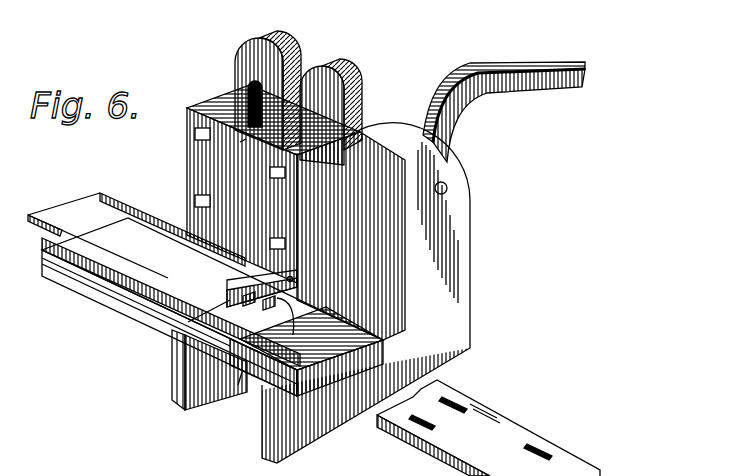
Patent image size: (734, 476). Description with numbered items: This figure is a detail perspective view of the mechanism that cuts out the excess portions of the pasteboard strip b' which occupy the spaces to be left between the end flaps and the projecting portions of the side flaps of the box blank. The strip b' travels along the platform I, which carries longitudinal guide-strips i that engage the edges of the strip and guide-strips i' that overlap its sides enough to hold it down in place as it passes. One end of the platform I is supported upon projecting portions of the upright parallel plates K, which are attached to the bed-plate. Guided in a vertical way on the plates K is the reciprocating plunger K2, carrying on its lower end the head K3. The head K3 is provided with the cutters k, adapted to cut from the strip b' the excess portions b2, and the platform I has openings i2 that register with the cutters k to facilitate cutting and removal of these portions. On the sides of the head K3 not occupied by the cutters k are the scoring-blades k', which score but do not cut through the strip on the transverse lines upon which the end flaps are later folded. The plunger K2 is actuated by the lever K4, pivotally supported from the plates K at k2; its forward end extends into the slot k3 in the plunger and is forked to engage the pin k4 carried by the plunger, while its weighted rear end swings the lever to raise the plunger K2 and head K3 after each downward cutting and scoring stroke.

The upright parallel plates K is at (345, 93).
The reciprocating plunger K2 is at (286, 23).
The lever pivot k2 is at (447, 189).
The slot in plunger k3 is at (246, 90).
The head K3 is at (118, 360).
The lever K4 is at (505, 113).
The pin k4 is at (240, 142).
The scoring-blades k' is at (247, 227).
The cutters k is at (253, 310).
The platform I is at (146, 306).
The longitudinal guide-strips i is at (291, 319).
The longitudinal guide-strips i' is at (164, 274).
The openings i2 is at (238, 385).
The excess portions b2 is at (117, 208).
The pasteboard strip b' is at (488, 428).